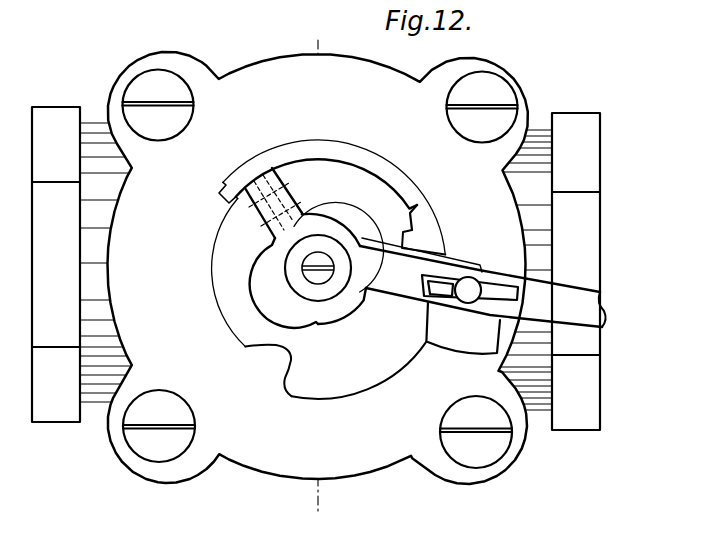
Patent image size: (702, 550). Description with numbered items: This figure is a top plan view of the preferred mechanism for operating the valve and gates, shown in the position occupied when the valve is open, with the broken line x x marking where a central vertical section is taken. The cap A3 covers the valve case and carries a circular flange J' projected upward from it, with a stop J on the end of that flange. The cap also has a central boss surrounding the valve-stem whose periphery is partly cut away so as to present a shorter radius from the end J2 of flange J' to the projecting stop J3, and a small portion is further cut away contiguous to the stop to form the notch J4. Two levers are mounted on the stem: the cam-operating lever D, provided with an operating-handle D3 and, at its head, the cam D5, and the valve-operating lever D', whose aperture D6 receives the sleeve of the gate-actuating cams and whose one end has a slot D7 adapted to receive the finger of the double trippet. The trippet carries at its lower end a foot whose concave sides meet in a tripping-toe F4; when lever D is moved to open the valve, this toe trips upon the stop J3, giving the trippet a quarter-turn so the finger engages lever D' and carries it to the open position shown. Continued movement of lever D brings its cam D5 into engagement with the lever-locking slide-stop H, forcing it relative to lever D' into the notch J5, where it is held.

The cap A3 is at (316, 268).
The stop J is at (351, 206).
The circular flange J' is at (334, 185).
The end of flange J2 is at (228, 183).
The projecting stop J3 is at (290, 396).
The notch J4 is at (283, 356).
The notch J5 is at (419, 201).
The slide-stop H is at (277, 184).
The cam-operating lever D is at (481, 276).
The valve-operating lever D' is at (338, 263).
The operating-handle D3 is at (597, 306).
The cam D5 is at (264, 234).
The aperture D6 is at (278, 286).
The slot D7 is at (418, 296).
The tripping-toe F4 is at (430, 345).
The broken line x x is at (316, 276).